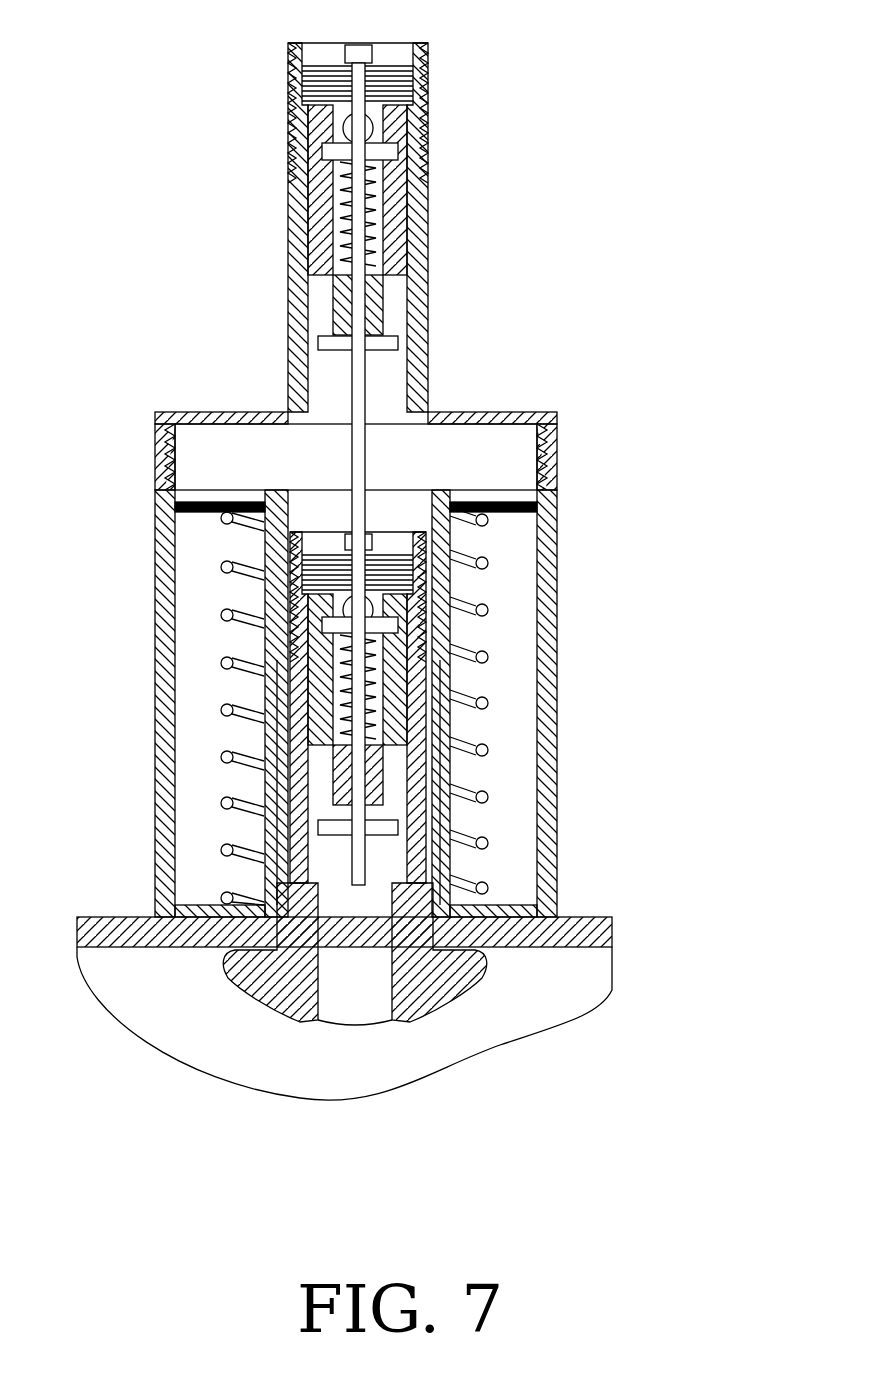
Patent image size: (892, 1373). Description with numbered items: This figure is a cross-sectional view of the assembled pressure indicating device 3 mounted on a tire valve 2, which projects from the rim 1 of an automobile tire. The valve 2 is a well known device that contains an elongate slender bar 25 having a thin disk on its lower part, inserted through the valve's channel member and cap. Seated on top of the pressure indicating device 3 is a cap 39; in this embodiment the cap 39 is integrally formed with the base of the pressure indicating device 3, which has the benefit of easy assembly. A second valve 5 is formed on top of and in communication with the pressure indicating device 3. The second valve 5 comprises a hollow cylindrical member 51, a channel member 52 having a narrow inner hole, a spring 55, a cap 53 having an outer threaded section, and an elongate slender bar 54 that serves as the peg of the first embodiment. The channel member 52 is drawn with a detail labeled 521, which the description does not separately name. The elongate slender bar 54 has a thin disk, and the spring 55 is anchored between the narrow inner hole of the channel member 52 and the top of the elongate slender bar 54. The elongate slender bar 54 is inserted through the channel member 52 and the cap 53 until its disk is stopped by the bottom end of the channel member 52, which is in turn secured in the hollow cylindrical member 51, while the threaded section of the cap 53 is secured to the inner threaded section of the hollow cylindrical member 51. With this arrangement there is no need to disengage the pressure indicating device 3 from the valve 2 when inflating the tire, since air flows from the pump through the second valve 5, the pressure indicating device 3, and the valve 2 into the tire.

The rim 1 is at (122, 932).
The valve 2 is at (268, 735).
The pressure indicating device 3 is at (135, 462).
The second valve 5 is at (467, 97).
The elongate slender bar 25 is at (362, 594).
The cap 39 is at (557, 395).
The hollow cylindrical member 51 is at (417, 258).
The channel member 52 is at (318, 258).
The piston flange 521 is at (342, 300).
The cap 53 is at (318, 132).
The elongate slender bar 54 is at (358, 383).
The spring 55 is at (368, 197).